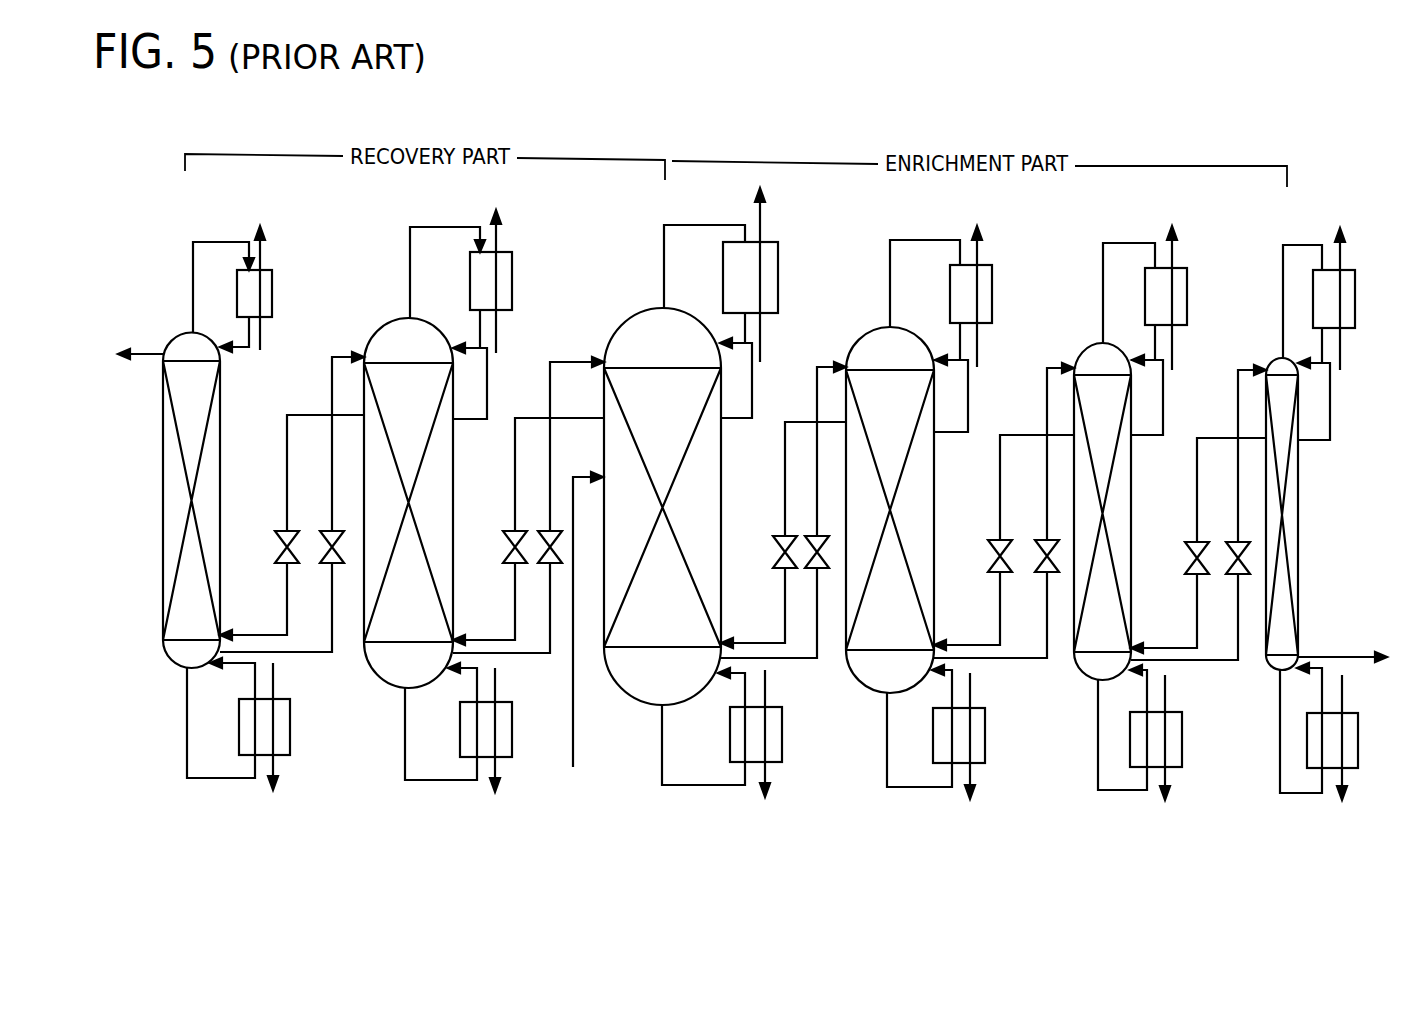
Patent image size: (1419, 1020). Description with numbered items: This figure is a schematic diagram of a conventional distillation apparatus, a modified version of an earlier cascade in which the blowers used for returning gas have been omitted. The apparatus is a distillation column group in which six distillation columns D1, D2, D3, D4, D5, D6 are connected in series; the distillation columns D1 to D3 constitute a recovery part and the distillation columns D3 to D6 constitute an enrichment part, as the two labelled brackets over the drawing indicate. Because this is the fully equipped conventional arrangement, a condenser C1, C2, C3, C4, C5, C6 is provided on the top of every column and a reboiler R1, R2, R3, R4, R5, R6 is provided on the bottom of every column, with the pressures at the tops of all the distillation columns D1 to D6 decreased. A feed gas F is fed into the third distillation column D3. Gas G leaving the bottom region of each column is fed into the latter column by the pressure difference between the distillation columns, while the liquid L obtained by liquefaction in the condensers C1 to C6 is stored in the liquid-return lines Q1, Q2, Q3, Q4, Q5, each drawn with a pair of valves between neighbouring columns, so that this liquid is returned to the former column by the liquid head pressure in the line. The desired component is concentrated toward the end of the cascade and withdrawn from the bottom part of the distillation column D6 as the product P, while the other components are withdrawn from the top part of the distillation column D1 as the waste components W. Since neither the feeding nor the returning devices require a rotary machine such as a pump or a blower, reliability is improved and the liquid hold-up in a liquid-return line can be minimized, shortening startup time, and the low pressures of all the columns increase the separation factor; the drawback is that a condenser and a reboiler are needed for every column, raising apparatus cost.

The distillation column D1 is at (172, 447).
The distillation column D2 is at (397, 470).
The distillation column D3 is at (657, 440).
The distillation column D4 is at (888, 440).
The distillation column D5 is at (1098, 472).
The distillation column D6 is at (1287, 515).
The condenser C1 is at (265, 285).
The condenser C2 is at (505, 285).
The condenser C3 is at (772, 265).
The condenser C4 is at (985, 295).
The condenser C5 is at (1180, 298).
The condenser C6 is at (1350, 300).
The reboiler R1 is at (282, 723).
The reboiler R2 is at (503, 727).
The reboiler R3 is at (773, 730).
The reboiler R4 is at (975, 733).
The reboiler R5 is at (1175, 737).
The reboiler R6 is at (1332, 735).
The liquid-return line Q1 is at (287, 481).
The liquid-return line Q2 is at (515, 481).
The liquid-return line Q3 is at (785, 524).
The liquid-return line Q4 is at (1000, 512).
The liquid-return line Q5 is at (1197, 522).
The liquid flow line L is at (743, 518).
The gas flow line G is at (743, 506).
The waste components W is at (129, 354).
The feed gas F is at (583, 638).
The product P is at (1355, 660).